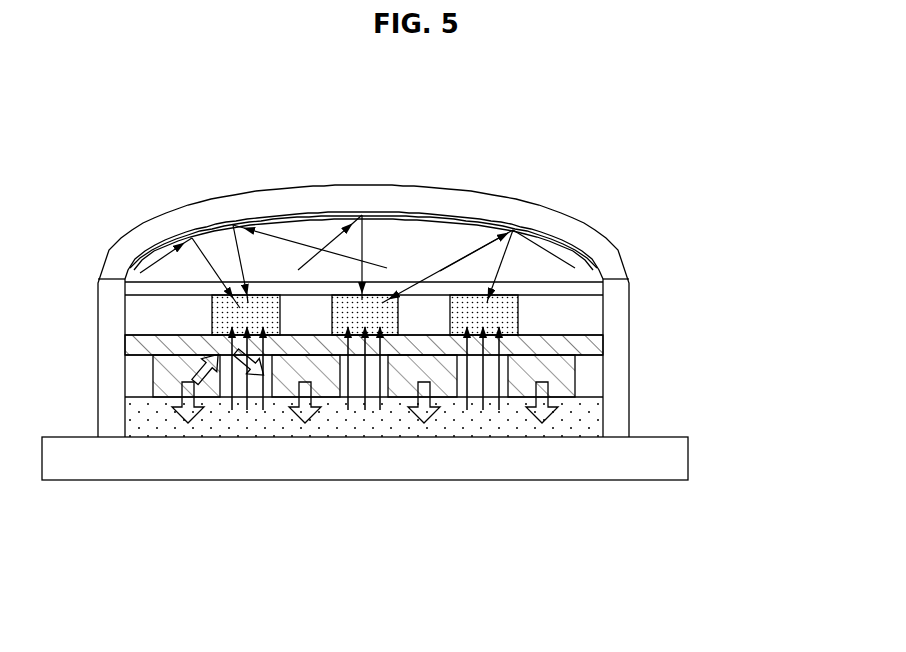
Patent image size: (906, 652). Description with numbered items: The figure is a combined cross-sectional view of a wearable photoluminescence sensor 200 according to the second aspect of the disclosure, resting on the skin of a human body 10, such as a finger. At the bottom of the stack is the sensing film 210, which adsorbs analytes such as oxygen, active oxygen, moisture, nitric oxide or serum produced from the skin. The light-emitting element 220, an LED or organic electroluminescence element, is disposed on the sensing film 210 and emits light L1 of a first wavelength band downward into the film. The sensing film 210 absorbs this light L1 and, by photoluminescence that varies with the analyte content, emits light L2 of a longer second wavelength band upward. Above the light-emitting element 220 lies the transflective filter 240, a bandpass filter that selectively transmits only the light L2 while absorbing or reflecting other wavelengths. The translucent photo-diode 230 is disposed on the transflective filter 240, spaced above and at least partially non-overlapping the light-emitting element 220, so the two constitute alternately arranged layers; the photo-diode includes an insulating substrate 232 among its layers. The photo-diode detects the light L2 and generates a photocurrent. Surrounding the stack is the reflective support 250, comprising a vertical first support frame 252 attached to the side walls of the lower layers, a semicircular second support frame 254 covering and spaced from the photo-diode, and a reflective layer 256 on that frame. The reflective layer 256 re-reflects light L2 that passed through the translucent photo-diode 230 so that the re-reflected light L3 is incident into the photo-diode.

The wearable photoluminescence sensor 200 is at (576, 113).
The human body 10 is at (685, 455).
The reflective support 250 is at (436, 311).
The second support frame 254 is at (553, 223).
The reflective layer 256 is at (583, 250).
The first support frame 252 is at (408, 358).
The transflective filter 240 is at (423, 335).
The insulating substrate 232 is at (285, 293).
The translucent photo-diode 230 is at (350, 293).
The light-emitting element 220 is at (441, 402).
The sensing film 210 is at (395, 418).
The light of the first wavelength band L1 is at (550, 390).
The light of the second wavelength band L2 is at (500, 370).
The re-reflected light L3 is at (462, 253).